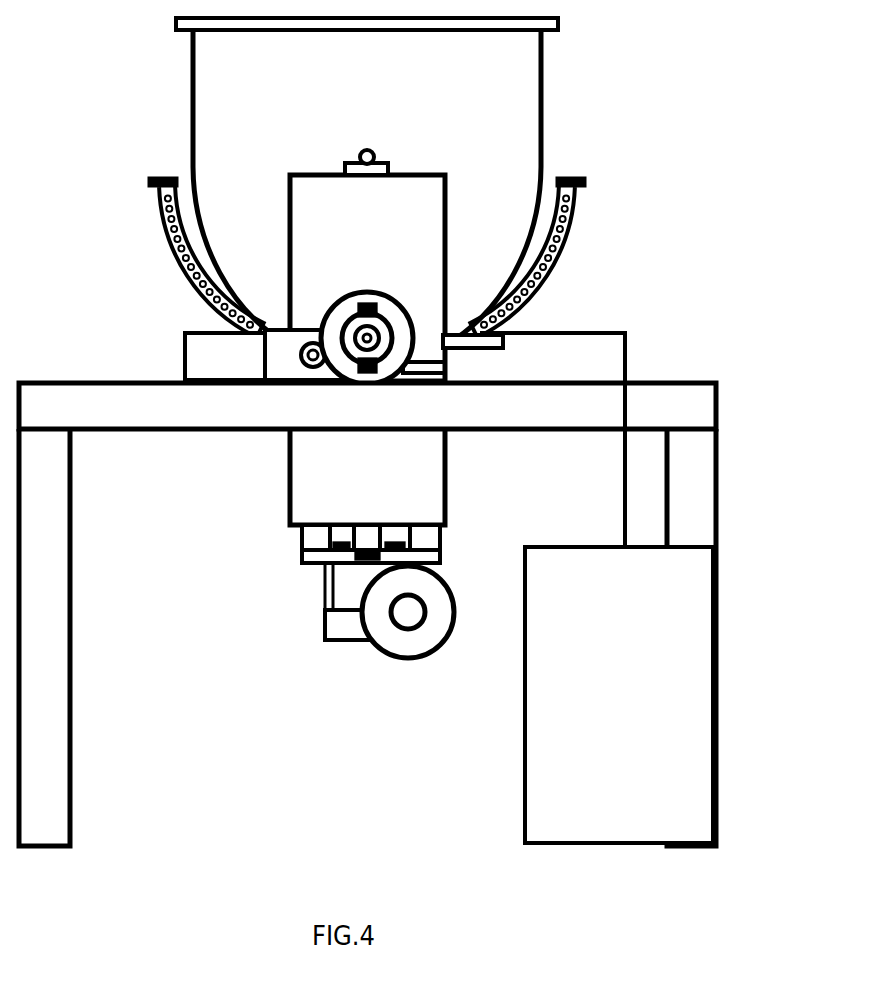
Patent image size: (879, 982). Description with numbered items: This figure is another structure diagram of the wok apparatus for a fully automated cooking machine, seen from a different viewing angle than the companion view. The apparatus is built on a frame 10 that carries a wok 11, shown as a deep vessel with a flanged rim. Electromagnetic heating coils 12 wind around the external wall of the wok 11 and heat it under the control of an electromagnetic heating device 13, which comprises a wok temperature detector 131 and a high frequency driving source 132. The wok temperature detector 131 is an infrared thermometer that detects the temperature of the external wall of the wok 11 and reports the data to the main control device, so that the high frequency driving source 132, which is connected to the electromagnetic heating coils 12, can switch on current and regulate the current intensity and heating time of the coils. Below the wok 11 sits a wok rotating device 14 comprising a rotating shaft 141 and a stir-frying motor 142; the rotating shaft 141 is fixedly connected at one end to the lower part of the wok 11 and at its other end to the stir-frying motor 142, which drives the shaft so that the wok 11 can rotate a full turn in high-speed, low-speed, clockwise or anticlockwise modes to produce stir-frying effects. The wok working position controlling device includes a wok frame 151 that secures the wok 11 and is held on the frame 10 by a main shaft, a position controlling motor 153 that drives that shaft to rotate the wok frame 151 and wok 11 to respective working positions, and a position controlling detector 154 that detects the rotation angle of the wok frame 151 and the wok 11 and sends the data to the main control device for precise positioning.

The frame 10 is at (37, 620).
The wok 11 is at (242, 110).
The electromagnetic heating coils 12 is at (180, 220).
The electromagnetic heating device 13 is at (620, 503).
The wok temperature detector 131 is at (388, 164).
The high frequency driving source 132 is at (641, 633).
The wok rotating device 14 is at (355, 652).
The rotating shaft 141 is at (370, 532).
The stir-frying motor 142 is at (398, 627).
The wok frame 151 is at (360, 478).
The position controlling motor 153 is at (362, 338).
The position controlling detector 154 is at (240, 362).